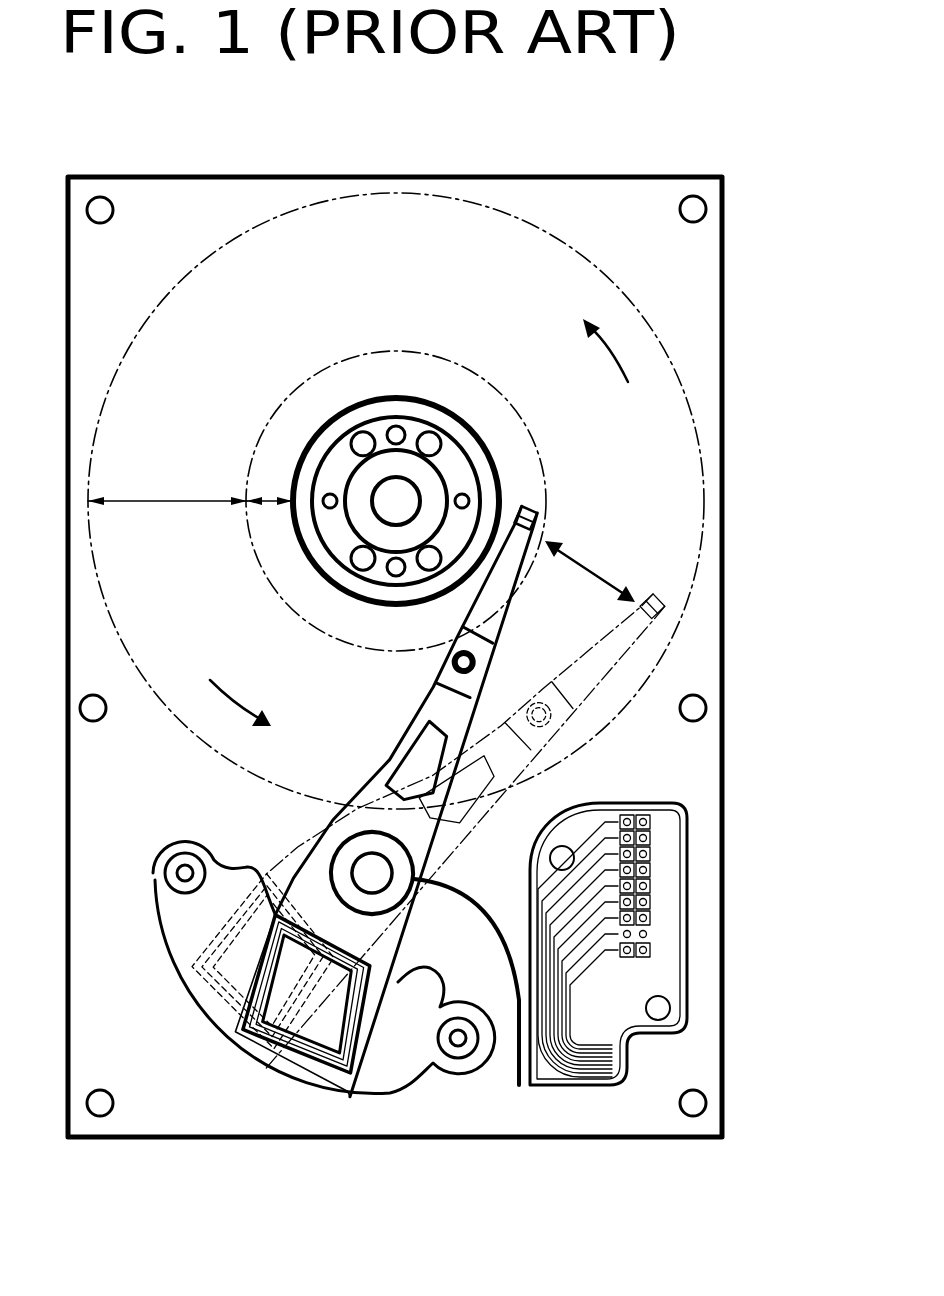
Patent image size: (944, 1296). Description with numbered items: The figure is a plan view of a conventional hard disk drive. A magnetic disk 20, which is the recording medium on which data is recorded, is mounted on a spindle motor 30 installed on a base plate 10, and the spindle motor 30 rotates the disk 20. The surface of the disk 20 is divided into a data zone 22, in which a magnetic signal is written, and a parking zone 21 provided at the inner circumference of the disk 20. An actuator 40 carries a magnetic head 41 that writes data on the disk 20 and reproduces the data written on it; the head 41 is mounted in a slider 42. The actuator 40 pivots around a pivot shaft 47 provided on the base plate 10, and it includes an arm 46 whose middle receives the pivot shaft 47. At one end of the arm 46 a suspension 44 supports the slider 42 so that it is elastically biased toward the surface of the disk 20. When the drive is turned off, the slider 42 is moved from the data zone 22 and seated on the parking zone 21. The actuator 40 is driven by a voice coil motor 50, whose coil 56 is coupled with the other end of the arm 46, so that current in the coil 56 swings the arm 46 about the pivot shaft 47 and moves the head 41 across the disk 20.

The base plate 10 is at (705, 296).
The magnetic disk 20 is at (683, 556).
The parking zone 21 is at (270, 500).
The data zone 22 is at (168, 500).
The spindle motor 30 is at (455, 460).
The actuator 40 is at (421, 800).
The magnetic head 41 is at (537, 518).
The slider 42 is at (540, 530).
The suspension 44 is at (458, 606).
The arm 46 is at (383, 762).
The pivot shaft 47 is at (378, 870).
The voice coil motor 50 is at (432, 1092).
The coil 56 is at (345, 1082).